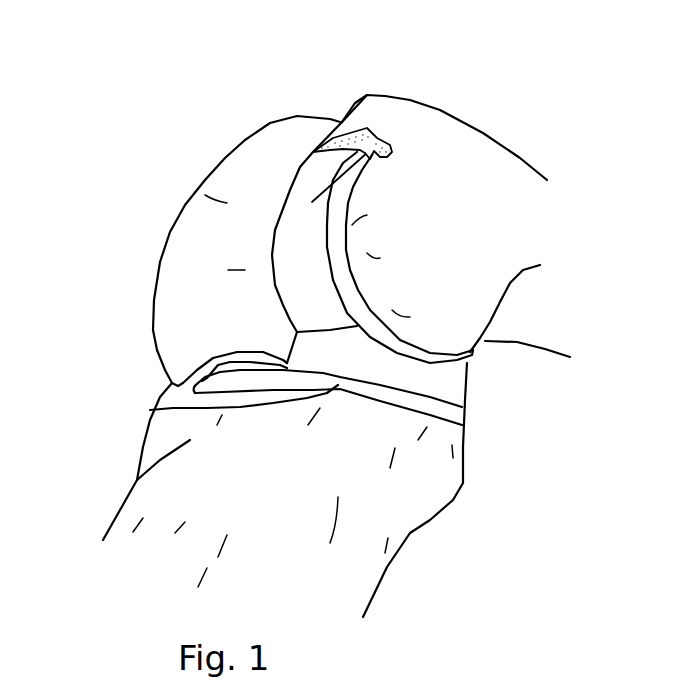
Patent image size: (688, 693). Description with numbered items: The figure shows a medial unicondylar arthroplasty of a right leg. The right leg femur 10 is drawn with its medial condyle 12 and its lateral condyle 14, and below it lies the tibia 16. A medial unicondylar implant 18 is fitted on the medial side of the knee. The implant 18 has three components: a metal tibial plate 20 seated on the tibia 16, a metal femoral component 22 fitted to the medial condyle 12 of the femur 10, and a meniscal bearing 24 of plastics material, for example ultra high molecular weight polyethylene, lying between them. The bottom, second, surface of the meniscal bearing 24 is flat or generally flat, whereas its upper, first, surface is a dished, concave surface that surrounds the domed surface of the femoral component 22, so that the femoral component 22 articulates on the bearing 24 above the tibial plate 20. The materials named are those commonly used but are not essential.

The right leg femur 10 is at (517, 140).
The medial condyle 12 is at (453, 307).
The lateral condyle 14 is at (197, 268).
The tibia 16 is at (410, 510).
The medial unicondylar implant 18 is at (242, 240).
The tibial plate 20 is at (150, 410).
The femoral component 22 is at (388, 142).
The meniscal bearing 24 is at (440, 383).